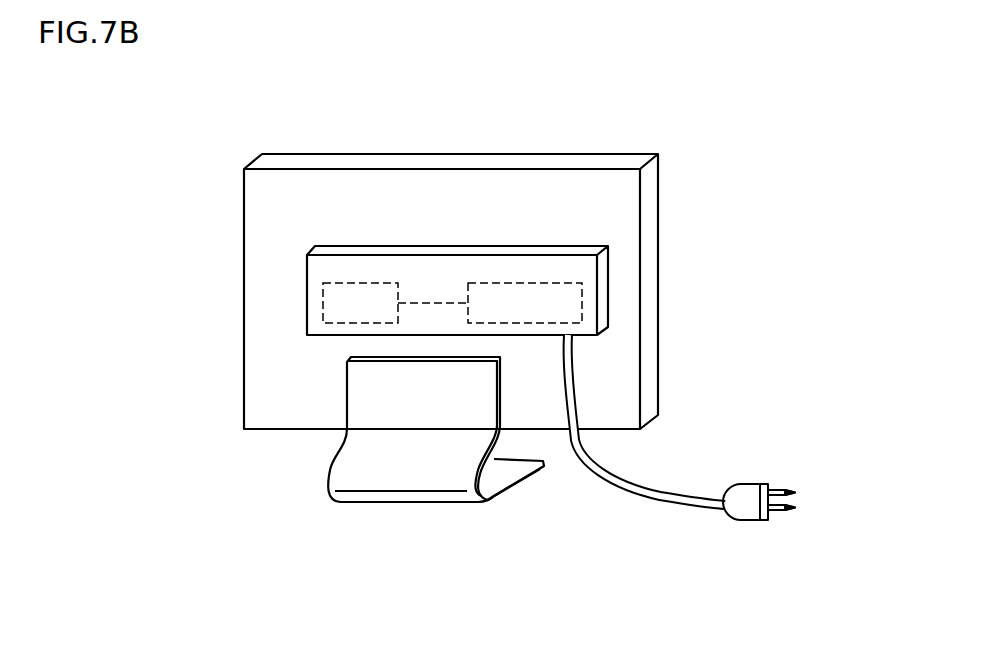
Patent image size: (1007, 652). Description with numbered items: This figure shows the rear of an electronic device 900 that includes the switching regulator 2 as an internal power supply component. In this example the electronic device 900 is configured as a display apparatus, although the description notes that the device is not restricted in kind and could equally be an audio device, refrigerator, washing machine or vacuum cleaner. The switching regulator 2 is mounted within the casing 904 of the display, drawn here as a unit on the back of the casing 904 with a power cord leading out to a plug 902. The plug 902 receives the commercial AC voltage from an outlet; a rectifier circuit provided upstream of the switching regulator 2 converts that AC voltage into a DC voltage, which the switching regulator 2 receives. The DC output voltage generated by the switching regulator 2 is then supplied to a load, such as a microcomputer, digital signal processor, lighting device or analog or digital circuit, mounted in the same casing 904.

The electronic device 900 is at (546, 338).
The casing 904 is at (517, 190).
The switching regulator 2 is at (565, 303).
The plug 902 is at (742, 514).